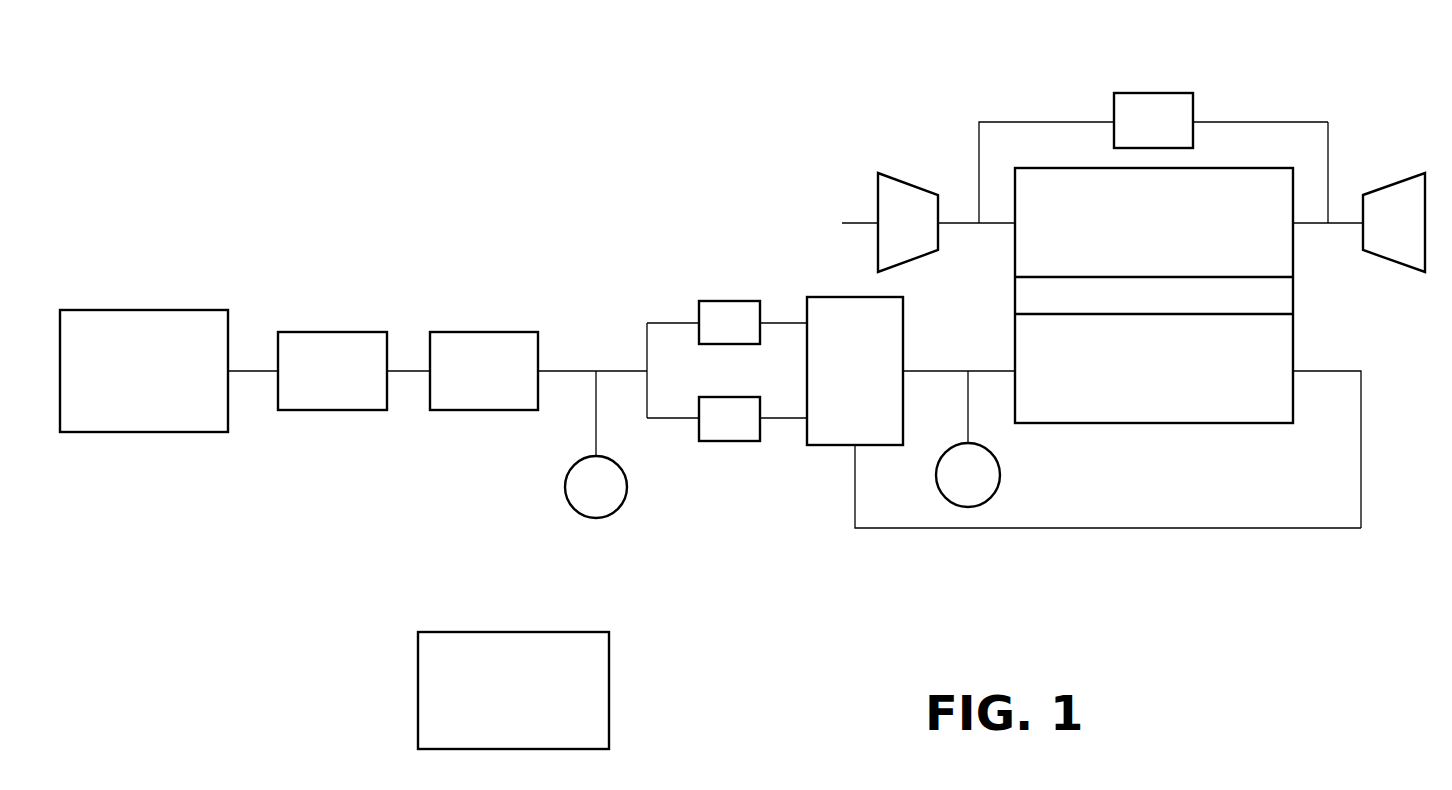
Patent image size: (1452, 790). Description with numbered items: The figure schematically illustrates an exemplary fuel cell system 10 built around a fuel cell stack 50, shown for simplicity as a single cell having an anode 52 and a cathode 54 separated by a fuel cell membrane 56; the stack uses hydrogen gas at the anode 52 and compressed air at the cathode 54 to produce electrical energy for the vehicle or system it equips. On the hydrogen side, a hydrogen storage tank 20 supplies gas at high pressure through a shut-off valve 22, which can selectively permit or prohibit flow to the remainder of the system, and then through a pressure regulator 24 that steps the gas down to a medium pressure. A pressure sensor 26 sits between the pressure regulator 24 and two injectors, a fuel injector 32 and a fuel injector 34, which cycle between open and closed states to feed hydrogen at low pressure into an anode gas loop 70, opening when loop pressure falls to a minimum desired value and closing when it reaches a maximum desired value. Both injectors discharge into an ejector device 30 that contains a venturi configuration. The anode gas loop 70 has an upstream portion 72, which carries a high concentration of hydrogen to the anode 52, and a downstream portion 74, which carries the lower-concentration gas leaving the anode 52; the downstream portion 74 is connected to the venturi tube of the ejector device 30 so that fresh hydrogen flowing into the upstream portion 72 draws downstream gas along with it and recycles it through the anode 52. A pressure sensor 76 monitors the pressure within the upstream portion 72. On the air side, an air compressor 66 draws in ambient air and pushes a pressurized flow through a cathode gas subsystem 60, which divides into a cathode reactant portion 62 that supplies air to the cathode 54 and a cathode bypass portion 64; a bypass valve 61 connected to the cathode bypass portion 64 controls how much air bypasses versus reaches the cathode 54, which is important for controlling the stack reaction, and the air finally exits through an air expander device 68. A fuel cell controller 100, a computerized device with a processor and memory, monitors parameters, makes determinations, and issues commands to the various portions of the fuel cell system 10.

The fuel cell system 10 is at (398, 104).
The hydrogen storage tank 20 is at (142, 310).
The shut-off valve 22 is at (330, 332).
The pressure regulator 24 is at (480, 332).
The pressure sensor 26 is at (627, 487).
The ejector device 30 is at (826, 297).
The fuel injector 32 is at (720, 301).
The fuel injector 34 is at (740, 441).
The fuel cell stack 50 is at (1015, 296).
The anode 52 is at (1275, 360).
The cathode 54 is at (1215, 168).
The fuel cell membrane 56 is at (1275, 297).
The cathode gas subsystem 60 is at (1290, 122).
The bypass valve 61 is at (1160, 93).
The cathode reactant portion 62 is at (1305, 225).
The cathode bypass portion 64 is at (1328, 158).
The air compressor 66 is at (1395, 262).
The air expander device 68 is at (910, 186).
The anode gas loop 70 is at (1213, 528).
The upstream portion 72 is at (953, 371).
The downstream portion 74 is at (1313, 528).
The pressure sensor 76 is at (1000, 475).
The fuel cell controller 100 is at (609, 685).